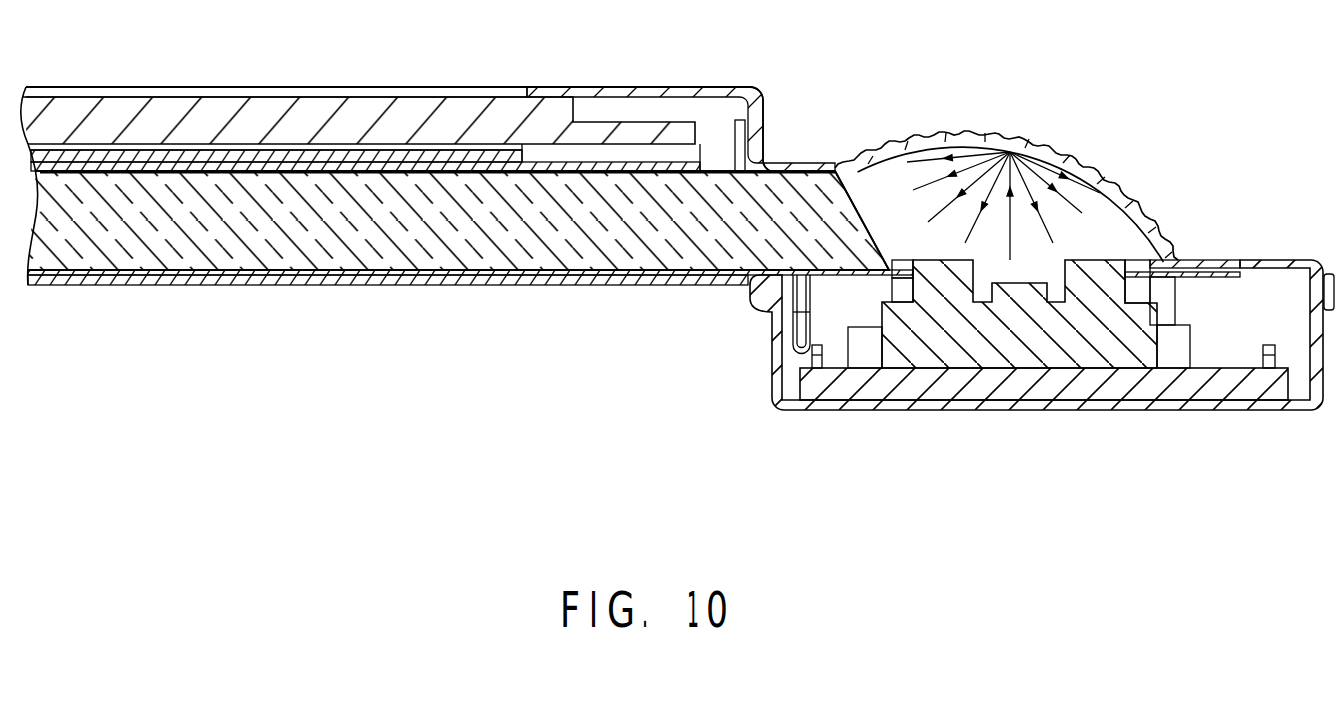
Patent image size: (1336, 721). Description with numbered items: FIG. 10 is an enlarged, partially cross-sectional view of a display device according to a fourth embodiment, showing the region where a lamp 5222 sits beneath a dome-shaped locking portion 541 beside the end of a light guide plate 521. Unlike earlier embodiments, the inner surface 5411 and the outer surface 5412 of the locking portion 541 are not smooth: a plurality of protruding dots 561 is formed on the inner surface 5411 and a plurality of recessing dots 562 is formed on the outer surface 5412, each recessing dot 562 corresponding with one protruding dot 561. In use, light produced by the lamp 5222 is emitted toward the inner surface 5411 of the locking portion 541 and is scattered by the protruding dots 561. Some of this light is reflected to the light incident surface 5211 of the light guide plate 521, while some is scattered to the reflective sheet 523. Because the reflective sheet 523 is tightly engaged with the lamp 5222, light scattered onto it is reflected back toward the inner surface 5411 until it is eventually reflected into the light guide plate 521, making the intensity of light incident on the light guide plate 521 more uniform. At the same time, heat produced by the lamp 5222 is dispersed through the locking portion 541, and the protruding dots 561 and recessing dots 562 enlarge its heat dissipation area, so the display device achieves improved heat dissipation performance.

The light guide plate 521 is at (138, 243).
The light incident surface 5211 is at (863, 222).
The reflective sheet 523 is at (1229, 262).
The lamp 5222 is at (1095, 287).
The locking portion 541 is at (1006, 139).
The inner surface 5411 is at (1119, 206).
The outer surface 5412 is at (1046, 146).
The protruding dots 561 is at (880, 170).
The recessing dots 562 is at (1012, 150).